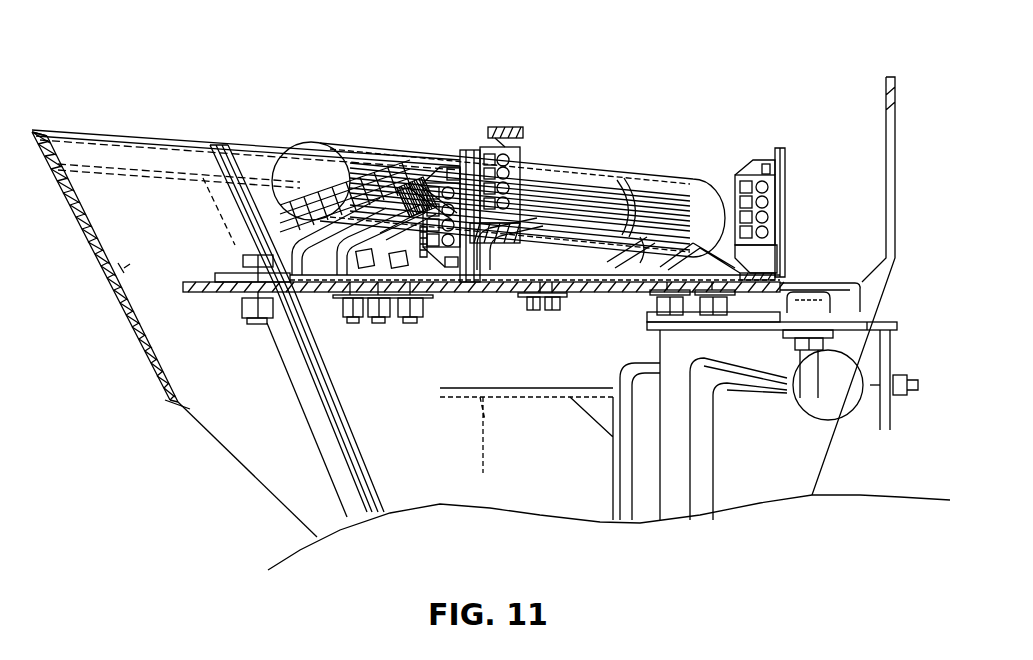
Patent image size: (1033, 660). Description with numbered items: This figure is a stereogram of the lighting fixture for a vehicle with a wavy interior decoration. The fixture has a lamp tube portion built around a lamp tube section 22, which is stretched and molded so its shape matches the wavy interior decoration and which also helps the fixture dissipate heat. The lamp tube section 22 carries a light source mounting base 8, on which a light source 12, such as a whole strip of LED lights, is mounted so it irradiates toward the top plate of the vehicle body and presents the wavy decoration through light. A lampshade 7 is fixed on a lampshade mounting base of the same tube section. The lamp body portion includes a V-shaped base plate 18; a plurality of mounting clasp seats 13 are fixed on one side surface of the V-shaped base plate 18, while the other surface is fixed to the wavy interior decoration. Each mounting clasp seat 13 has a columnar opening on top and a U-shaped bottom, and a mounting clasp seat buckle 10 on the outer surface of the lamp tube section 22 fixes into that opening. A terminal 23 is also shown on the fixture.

The lampshade 7 is at (300, 142).
The light source mounting base 8 is at (297, 178).
The mounting clasp seat buckle 10 is at (627, 187).
The light source 12 is at (330, 158).
The mounting clasp seat 13 is at (638, 187).
The V-shaped base plate 18 is at (287, 313).
The lamp tube section 22 is at (292, 214).
The terminal 23 is at (517, 128).